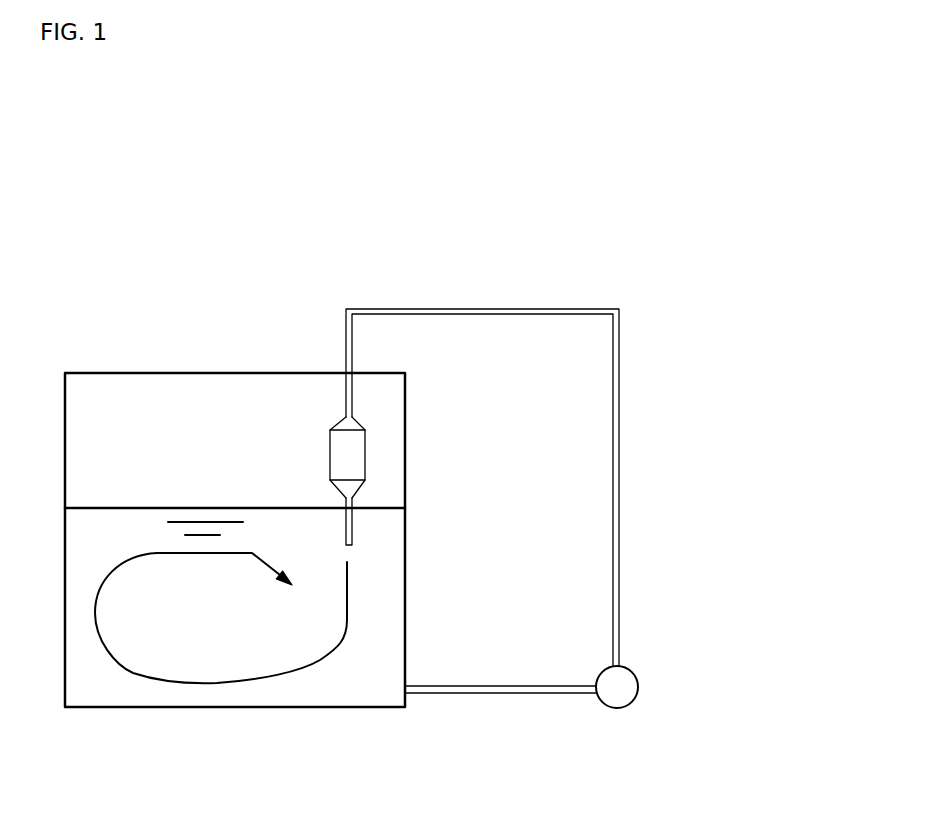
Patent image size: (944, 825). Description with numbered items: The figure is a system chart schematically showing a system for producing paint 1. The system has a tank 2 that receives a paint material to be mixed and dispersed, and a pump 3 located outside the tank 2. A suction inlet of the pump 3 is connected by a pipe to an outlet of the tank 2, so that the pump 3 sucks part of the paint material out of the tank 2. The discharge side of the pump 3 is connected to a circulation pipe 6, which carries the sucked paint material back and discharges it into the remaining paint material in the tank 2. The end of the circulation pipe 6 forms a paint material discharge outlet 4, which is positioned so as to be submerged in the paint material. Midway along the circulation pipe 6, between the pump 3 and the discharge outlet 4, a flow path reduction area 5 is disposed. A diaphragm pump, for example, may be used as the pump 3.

The system for producing paint 1 is at (741, 178).
The tank 2 is at (217, 373).
The pump 3 is at (634, 677).
The paint material discharge outlet 4 is at (350, 547).
The flow path reduction area 5 is at (368, 447).
The circulation pipe 6 is at (622, 459).